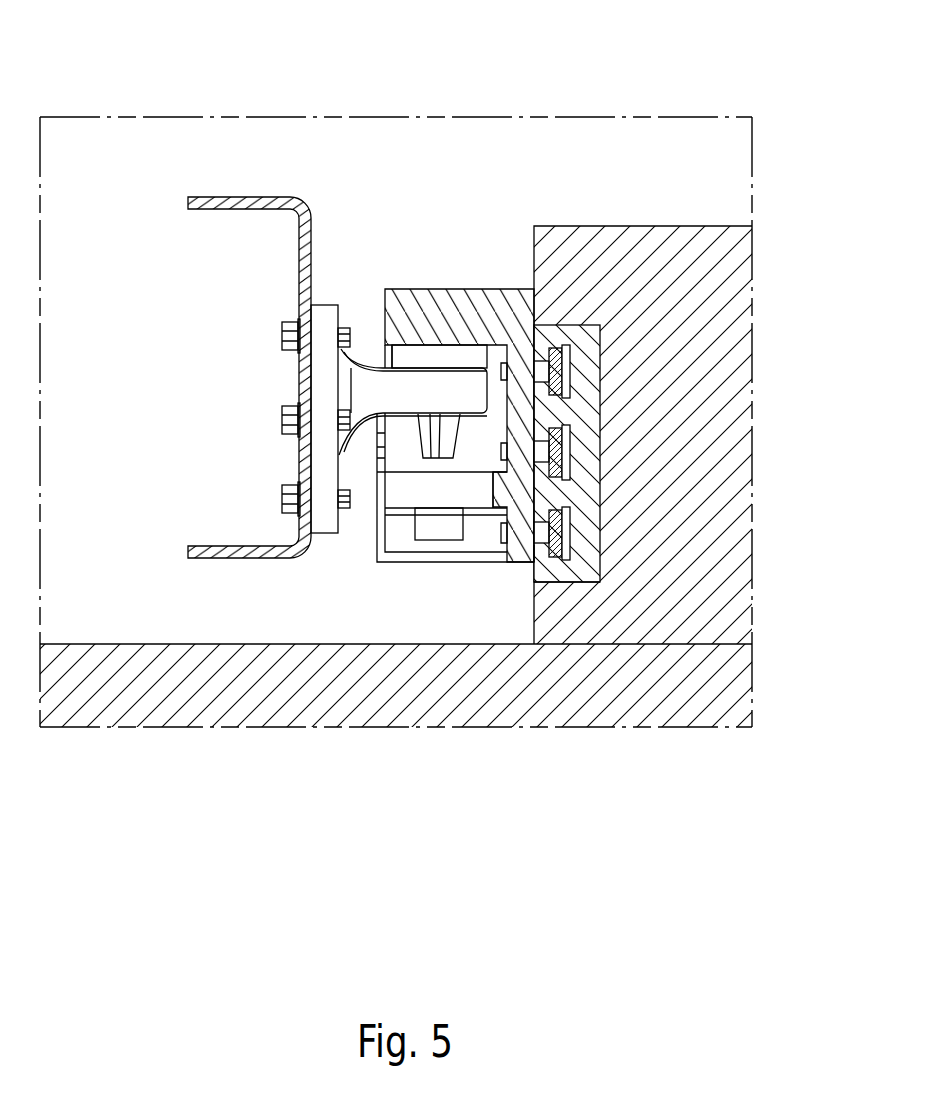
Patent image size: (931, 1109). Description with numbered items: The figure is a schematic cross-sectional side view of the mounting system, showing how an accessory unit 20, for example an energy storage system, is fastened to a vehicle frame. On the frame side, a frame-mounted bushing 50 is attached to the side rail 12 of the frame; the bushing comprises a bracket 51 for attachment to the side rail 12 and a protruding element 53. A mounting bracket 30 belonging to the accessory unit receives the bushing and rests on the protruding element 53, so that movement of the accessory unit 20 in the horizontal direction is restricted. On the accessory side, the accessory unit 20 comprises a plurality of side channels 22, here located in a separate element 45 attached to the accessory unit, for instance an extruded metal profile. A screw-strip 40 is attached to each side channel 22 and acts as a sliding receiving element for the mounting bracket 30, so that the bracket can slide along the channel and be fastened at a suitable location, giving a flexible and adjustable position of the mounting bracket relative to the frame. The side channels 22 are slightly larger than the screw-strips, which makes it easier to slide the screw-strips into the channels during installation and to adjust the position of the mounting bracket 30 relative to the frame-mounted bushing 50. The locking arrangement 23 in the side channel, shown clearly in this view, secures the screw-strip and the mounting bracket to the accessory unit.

The side rail 12 is at (270, 560).
The accessory unit 20 is at (717, 224).
The side channel 22 is at (567, 553).
The locking arrangement 23 is at (542, 565).
The mounting bracket 30 is at (488, 289).
The screw-strip 40 is at (562, 350).
The element attached to the accessory unit 45 is at (587, 560).
The frame-mounted bushing 50 is at (428, 393).
The mounting plate 51 is at (327, 533).
The protruding element 53 is at (438, 357).